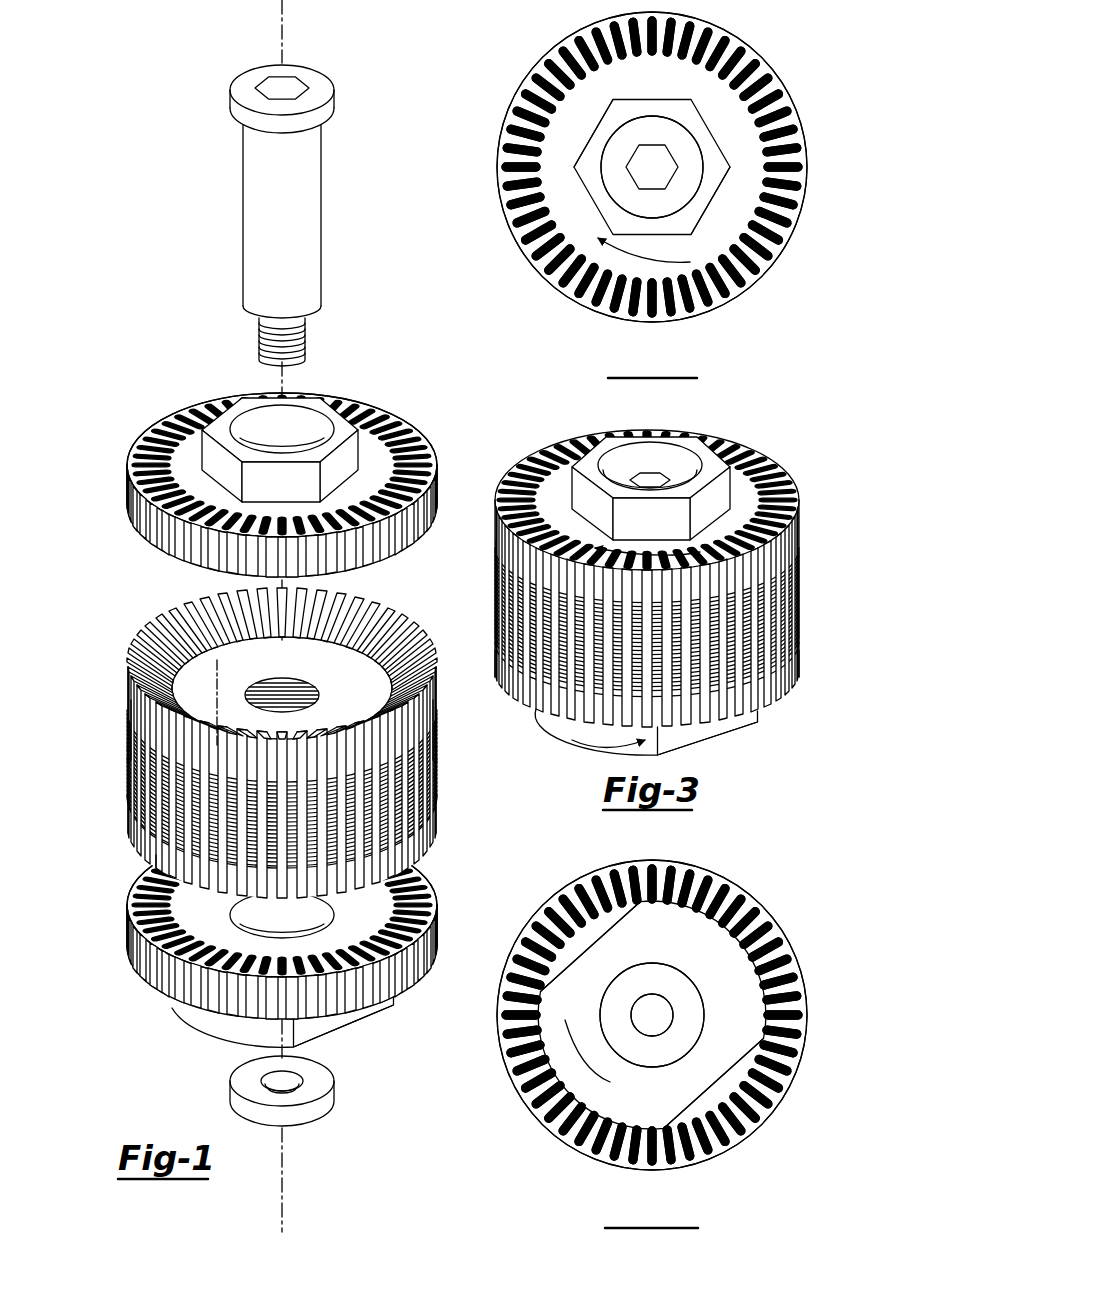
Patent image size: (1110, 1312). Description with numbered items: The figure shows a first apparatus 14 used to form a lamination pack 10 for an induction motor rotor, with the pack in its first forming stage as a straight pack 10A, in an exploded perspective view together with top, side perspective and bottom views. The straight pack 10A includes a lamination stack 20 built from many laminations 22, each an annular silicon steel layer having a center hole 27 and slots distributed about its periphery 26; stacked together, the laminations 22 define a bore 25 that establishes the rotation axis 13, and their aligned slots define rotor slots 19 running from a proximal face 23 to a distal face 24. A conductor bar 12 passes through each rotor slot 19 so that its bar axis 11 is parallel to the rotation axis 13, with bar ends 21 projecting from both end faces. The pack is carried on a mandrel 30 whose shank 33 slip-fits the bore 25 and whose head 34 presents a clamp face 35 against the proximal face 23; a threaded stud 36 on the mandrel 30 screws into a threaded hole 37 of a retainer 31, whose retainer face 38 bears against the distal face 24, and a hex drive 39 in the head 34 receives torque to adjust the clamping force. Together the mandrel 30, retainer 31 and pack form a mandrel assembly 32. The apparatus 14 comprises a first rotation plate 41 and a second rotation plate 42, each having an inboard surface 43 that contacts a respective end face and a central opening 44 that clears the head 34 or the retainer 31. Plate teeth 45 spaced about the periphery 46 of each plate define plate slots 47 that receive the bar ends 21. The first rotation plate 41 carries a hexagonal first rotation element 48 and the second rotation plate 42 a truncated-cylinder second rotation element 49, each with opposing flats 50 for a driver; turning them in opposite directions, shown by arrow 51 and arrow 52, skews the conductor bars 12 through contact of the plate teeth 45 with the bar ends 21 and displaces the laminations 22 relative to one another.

In FIG. 2, the lamination pack 10 is at (795, 55).
In FIG. 3, the lamination pack 10 is at (820, 575).
In FIG. 4, the lamination pack 10 is at (810, 915).
In FIG. 1, the straight pack 10A is at (118, 670).
In FIG. 1, the bar axis 11 is at (216, 690).
In FIG. 1, the conductor bars 12 is at (155, 640).
In FIG. 2, the conductor bars 12 is at (540, 70).
In FIG. 3, the conductor bars 12 is at (647, 617).
In FIG. 4, the conductor bars 12 is at (735, 893).
In FIG. 1, the rotation axis 13 is at (300, 20).
In FIG. 1, the first apparatus 14 is at (178, 128).
In FIG. 2, the first apparatus 14 is at (810, 138).
In FIG. 3, the first apparatus 14 is at (845, 595).
In FIG. 4, the first apparatus 14 is at (835, 1038).
In FIG. 1, the rotor slots 19 is at (150, 776).
In FIG. 3, the rotor slots 19 is at (512, 620).
In FIG. 1, the lamination stack 20 is at (115, 795).
In FIG. 3, the lamination stack 20 is at (812, 630).
In FIG. 1, the bar ends 21 is at (405, 640).
In FIG. 2, the bar ends 21 is at (806, 180).
In FIG. 3, the bar ends 21 is at (768, 468).
In FIG. 4, the bar ends 21 is at (530, 1090).
In FIG. 1, the laminations 22 is at (132, 735).
In FIG. 3, the laminations 22 is at (510, 575).
In FIG. 1, the proximal face 23 is at (330, 634).
In FIG. 1, the distal face 24 is at (158, 840).
In FIG. 1, the bore 25 is at (308, 686).
In FIG. 1, the periphery 26 is at (415, 805).
In FIG. 3, the periphery 26 is at (578, 700).
In FIG. 1, the center hole 27 is at (266, 690).
In FIG. 1, the mandrel 30 is at (330, 195).
In FIG. 1, the retainer 31 is at (340, 1110).
In FIG. 4, the retainer 31 is at (695, 982).
In FIG. 1, the mandrel assembly 32 is at (218, 240).
In FIG. 2, the mandrel assembly 32 is at (652, 110).
In FIG. 3, the mandrel assembly 32 is at (625, 445).
In FIG. 4, the mandrel assembly 32 is at (652, 955).
In FIG. 1, the shank 33 is at (322, 232).
In FIG. 1, the head 34 is at (335, 100).
In FIG. 2, the head 34 is at (700, 150).
In FIG. 3, the head 34 is at (668, 455).
In FIG. 1, the clamp face 35 is at (240, 128).
In FIG. 1, the threaded stud 36 is at (306, 340).
In FIG. 4, the threaded stud 36 is at (655, 1040).
In FIG. 1, the threaded hole 37 is at (262, 1080).
In FIG. 4, the threaded hole 37 is at (665, 1023).
In FIG. 1, the retainer face 38 is at (312, 1075).
In FIG. 1, the hex drive 39 is at (277, 84).
In FIG. 1, the first rotation plate 41 is at (122, 433).
In FIG. 2, the first rotation plate 41 is at (740, 32).
In FIG. 3, the first rotation plate 41 is at (800, 490).
In FIG. 1, the second rotation plate 42 is at (108, 932).
In FIG. 3, the second rotation plate 42 is at (810, 690).
In FIG. 4, the second rotation plate 42 is at (820, 988).
In FIG. 1, the inboard surface 43 is at (425, 955).
In FIG. 1, the central opening 44 is at (303, 417).
In FIG. 2, the central opening 44 is at (612, 142).
In FIG. 3, the central opening 44 is at (645, 445).
In FIG. 4, the central opening 44 is at (612, 995).
In FIG. 1, the plate teeth 45 is at (183, 440).
In FIG. 2, the plate teeth 45 is at (497, 173).
In FIG. 3, the plate teeth 45 is at (575, 448).
In FIG. 4, the plate teeth 45 is at (500, 1057).
In FIG. 1, the periphery 46 is at (132, 520).
In FIG. 2, the periphery 46 is at (540, 275).
In FIG. 3, the periphery 46 is at (800, 545).
In FIG. 4, the periphery 46 is at (765, 908).
In FIG. 1, the plate slots 47 is at (205, 438).
In FIG. 1, the first rotation element 48 is at (342, 472).
In FIG. 2, the first rotation element 48 is at (712, 195).
In FIG. 3, the first rotation element 48 is at (712, 505).
In FIG. 1, the second rotation element 49 is at (200, 1020).
In FIG. 3, the second rotation element 49 is at (683, 748).
In FIG. 4, the second rotation element 49 is at (600, 922).
In FIG. 1, the opposing flats 50 is at (222, 470).
In FIG. 2, the opposing flats 50 is at (705, 140).
In FIG. 3, the opposing flats 50 is at (590, 505).
In FIG. 4, the opposing flats 50 is at (575, 952).
In FIG. 2, the arrow 51 is at (626, 262).
In FIG. 3, the arrow 51 is at (650, 553).
In FIG. 3, the arrow 52 is at (590, 750).
In FIG. 4, the arrow 52 is at (610, 1082).